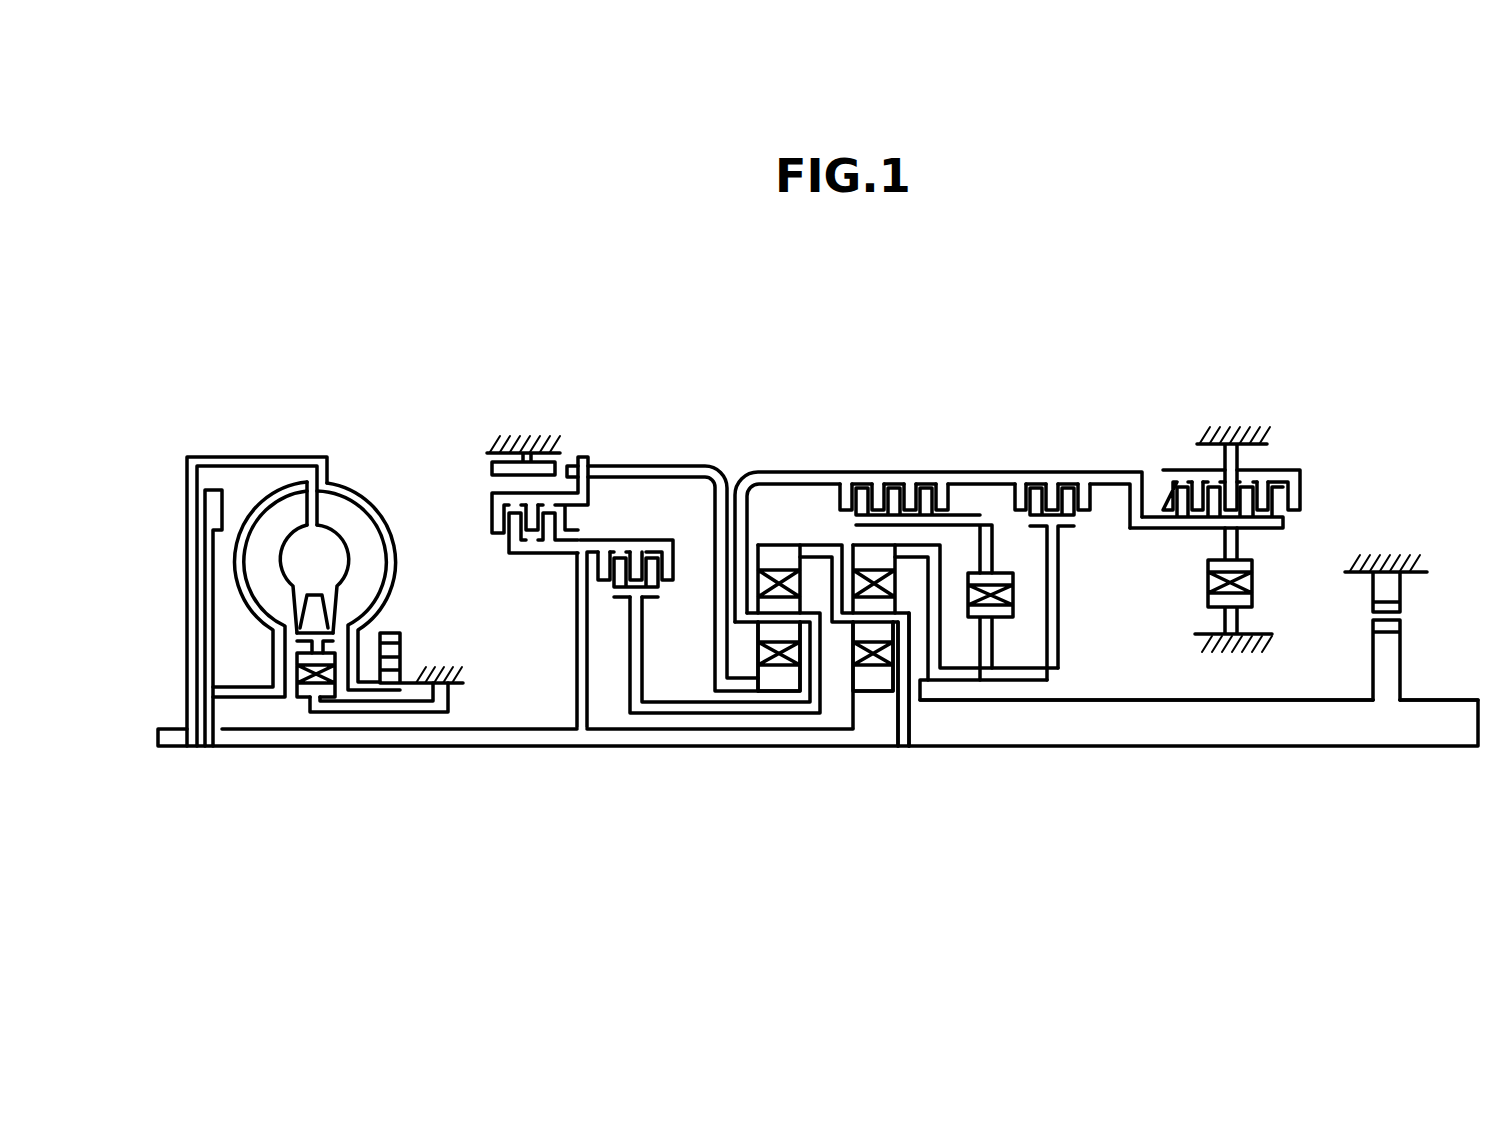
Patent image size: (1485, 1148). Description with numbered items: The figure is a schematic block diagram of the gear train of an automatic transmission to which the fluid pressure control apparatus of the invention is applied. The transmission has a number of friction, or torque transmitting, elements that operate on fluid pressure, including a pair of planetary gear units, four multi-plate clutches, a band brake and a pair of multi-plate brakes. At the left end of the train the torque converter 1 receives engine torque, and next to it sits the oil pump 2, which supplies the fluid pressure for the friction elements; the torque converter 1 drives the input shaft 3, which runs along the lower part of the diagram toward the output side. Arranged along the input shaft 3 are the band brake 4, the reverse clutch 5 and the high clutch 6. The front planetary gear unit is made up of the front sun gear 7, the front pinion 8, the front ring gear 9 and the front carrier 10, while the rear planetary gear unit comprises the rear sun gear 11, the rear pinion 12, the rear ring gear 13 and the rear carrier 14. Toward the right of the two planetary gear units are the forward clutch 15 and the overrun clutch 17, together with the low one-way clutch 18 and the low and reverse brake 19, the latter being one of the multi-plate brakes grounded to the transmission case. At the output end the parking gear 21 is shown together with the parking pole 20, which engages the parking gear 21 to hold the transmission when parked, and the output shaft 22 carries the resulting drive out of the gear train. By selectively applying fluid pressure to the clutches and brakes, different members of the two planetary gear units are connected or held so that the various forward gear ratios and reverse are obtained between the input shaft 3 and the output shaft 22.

The torque converter 1 is at (318, 552).
The oil pump 2 is at (393, 665).
The input shaft 3 is at (518, 735).
The band brake 4 is at (505, 445).
The reverse clutch 5 is at (527, 507).
The high clutch 6 is at (637, 558).
The front sun gear 7 is at (792, 630).
The front pinion 8 is at (770, 680).
The front ring gear 9 is at (787, 550).
The front carrier 10 is at (822, 680).
The rear sun gear 11 is at (867, 685).
The rear pinion 12 is at (885, 632).
The rear ring gear 13 is at (868, 557).
The rear carrier 14 is at (915, 680).
The forward clutch 15 is at (913, 490).
The overrun clutch 17 is at (1052, 490).
The low one-way clutch 18 is at (1252, 590).
The low & reverse brake 19 is at (1232, 492).
The parking pole 20 is at (1388, 593).
The parking gear 21 is at (1387, 648).
The output shaft 22 is at (1186, 729).